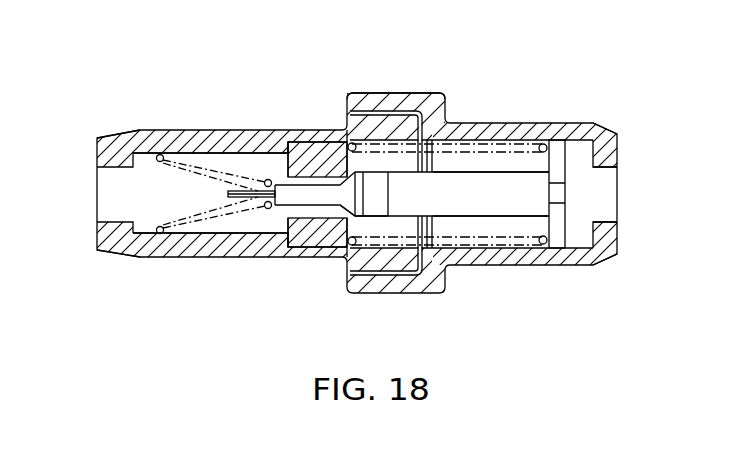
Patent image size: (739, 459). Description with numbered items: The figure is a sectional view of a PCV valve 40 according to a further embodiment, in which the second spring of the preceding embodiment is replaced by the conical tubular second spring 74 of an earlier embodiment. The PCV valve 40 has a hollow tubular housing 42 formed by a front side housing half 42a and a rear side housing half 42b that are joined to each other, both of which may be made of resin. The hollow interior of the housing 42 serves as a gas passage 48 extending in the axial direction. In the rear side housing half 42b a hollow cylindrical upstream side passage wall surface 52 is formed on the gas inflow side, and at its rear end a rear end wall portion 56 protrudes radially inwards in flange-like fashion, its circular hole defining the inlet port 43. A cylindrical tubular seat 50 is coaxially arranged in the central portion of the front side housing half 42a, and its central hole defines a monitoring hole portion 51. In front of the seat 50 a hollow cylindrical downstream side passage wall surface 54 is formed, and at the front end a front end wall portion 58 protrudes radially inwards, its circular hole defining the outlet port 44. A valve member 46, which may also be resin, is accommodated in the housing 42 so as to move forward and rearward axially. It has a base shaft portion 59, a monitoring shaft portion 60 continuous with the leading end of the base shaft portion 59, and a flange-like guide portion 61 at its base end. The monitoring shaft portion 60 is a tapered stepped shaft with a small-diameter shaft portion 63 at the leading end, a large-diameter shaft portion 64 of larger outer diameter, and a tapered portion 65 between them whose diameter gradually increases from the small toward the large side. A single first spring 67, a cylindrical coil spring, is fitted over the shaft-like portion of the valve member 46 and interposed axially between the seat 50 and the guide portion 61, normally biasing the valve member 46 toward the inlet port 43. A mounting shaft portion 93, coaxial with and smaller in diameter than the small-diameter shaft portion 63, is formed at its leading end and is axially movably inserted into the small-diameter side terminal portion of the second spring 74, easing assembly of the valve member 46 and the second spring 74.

The PCV valve 40 is at (454, 78).
The housing 42 is at (389, 86).
The front side housing half 42a is at (215, 135).
The rear side housing half 42b is at (537, 125).
The inlet port 43 is at (607, 197).
The outlet port 44 is at (97, 197).
The valve member 46 is at (490, 159).
The gas passage 48 is at (470, 224).
The seat 50 is at (322, 145).
The monitoring hole portion 51 is at (283, 168).
The upstream side passage wall surface 52 is at (600, 145).
The downstream side passage wall surface 54 is at (197, 234).
The rear end wall portion 56 is at (607, 157).
The front end wall portion 58 is at (95, 147).
The base shaft portion 59 is at (510, 224).
The monitoring shaft portion 60 is at (371, 226).
The guide portion 61 is at (558, 252).
The small-diameter shaft portion 63 is at (308, 197).
The large-diameter shaft portion 64 is at (405, 176).
The tapered portion 65 is at (354, 143).
The first spring 67 is at (348, 248).
The second spring 74 is at (160, 234).
The mounting shaft portion 93 is at (256, 208).